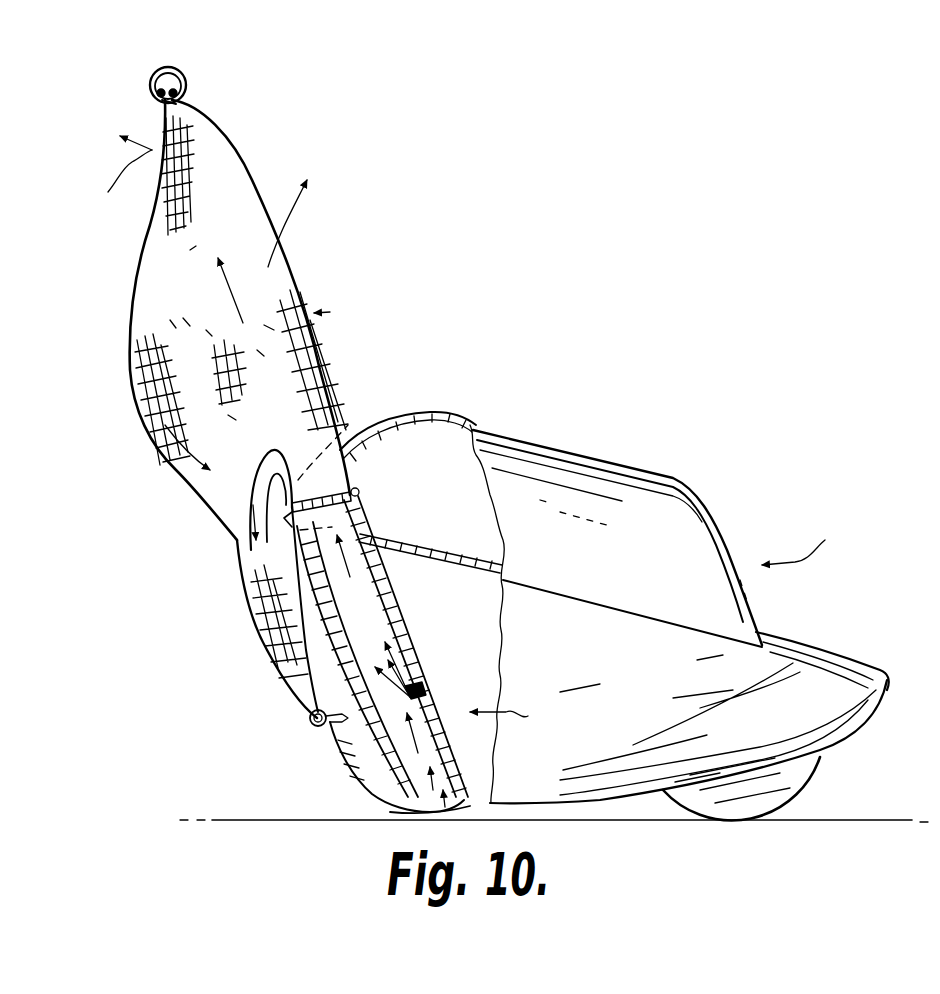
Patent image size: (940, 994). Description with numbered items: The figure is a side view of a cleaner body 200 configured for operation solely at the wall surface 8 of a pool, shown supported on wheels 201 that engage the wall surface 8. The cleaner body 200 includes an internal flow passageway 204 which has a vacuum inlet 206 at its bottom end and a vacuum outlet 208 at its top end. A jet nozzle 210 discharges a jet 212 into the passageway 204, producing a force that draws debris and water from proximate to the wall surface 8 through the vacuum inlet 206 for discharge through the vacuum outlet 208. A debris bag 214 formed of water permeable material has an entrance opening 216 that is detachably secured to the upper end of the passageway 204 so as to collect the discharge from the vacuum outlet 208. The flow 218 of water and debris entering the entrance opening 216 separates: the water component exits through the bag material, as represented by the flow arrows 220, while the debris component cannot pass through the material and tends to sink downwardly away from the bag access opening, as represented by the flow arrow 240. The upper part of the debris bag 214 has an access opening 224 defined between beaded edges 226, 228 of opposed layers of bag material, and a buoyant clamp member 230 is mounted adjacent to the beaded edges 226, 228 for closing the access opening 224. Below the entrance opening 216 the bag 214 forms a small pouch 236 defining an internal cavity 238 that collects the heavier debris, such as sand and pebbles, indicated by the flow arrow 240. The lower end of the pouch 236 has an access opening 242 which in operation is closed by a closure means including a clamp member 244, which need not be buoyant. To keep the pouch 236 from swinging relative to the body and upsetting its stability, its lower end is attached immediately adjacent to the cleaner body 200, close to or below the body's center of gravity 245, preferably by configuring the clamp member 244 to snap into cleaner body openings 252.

The wall surface 8 is at (895, 820).
The cleaner body 200 is at (681, 616).
The wheels 201 is at (815, 762).
The internal flow passageway 204 is at (232, 178).
The vacuum inlet 206 is at (436, 807).
The vacuum outlet 208 is at (354, 496).
The jet nozzle 210 is at (418, 690).
The jet 212 is at (398, 651).
The debris bag 214 is at (330, 312).
The entrance opening 216 is at (356, 489).
The flow 218 is at (370, 540).
The flow arrows 220 is at (328, 230).
The access opening 224 is at (184, 103).
The beaded edge 226 is at (150, 93).
The beaded edge 228 is at (182, 78).
The buoyant clamp member 230 is at (156, 74).
The pouch 236 is at (258, 636).
The internal cavity 238 is at (246, 588).
The flow arrow 240 is at (155, 451).
The access opening 242 is at (310, 711).
The clamp member 244 is at (315, 730).
The center of gravity 245 is at (523, 614).
The cleaner body openings 252 is at (336, 750).